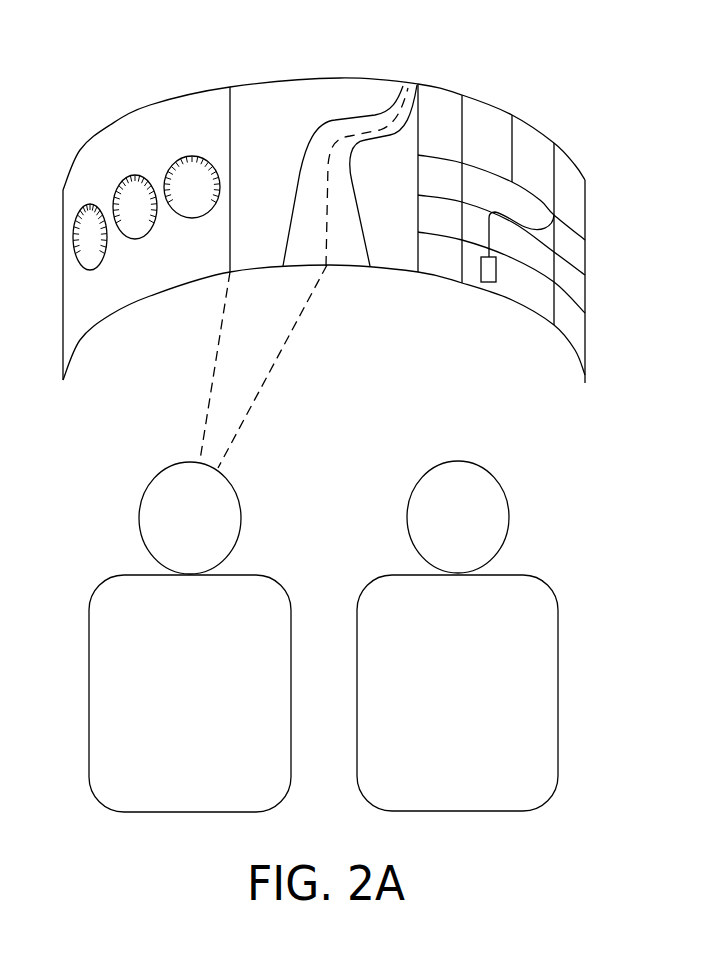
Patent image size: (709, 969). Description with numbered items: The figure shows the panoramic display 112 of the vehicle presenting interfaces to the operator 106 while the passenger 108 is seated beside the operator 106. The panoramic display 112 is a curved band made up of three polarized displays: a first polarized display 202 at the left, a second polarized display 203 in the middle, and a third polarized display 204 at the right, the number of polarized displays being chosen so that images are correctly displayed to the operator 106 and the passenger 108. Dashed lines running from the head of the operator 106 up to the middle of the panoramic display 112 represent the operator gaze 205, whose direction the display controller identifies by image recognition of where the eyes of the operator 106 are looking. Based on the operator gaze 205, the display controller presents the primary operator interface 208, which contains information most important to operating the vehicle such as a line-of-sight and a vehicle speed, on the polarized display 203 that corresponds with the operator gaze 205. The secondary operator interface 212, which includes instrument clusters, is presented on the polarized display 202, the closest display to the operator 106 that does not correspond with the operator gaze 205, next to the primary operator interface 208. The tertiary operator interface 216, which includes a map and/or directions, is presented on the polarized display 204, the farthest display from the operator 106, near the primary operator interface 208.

The panoramic display 112 is at (91, 98).
The polarized display 202 is at (170, 99).
The polarized display 203 is at (376, 82).
The polarized display 204 is at (538, 125).
The operator gaze 205 is at (270, 375).
The primary operator interface 208 is at (112, 293).
The secondary operator interface 212 is at (387, 250).
The tertiary operator interface 216 is at (567, 318).
The operator 106 is at (168, 710).
The passenger 108 is at (436, 710).